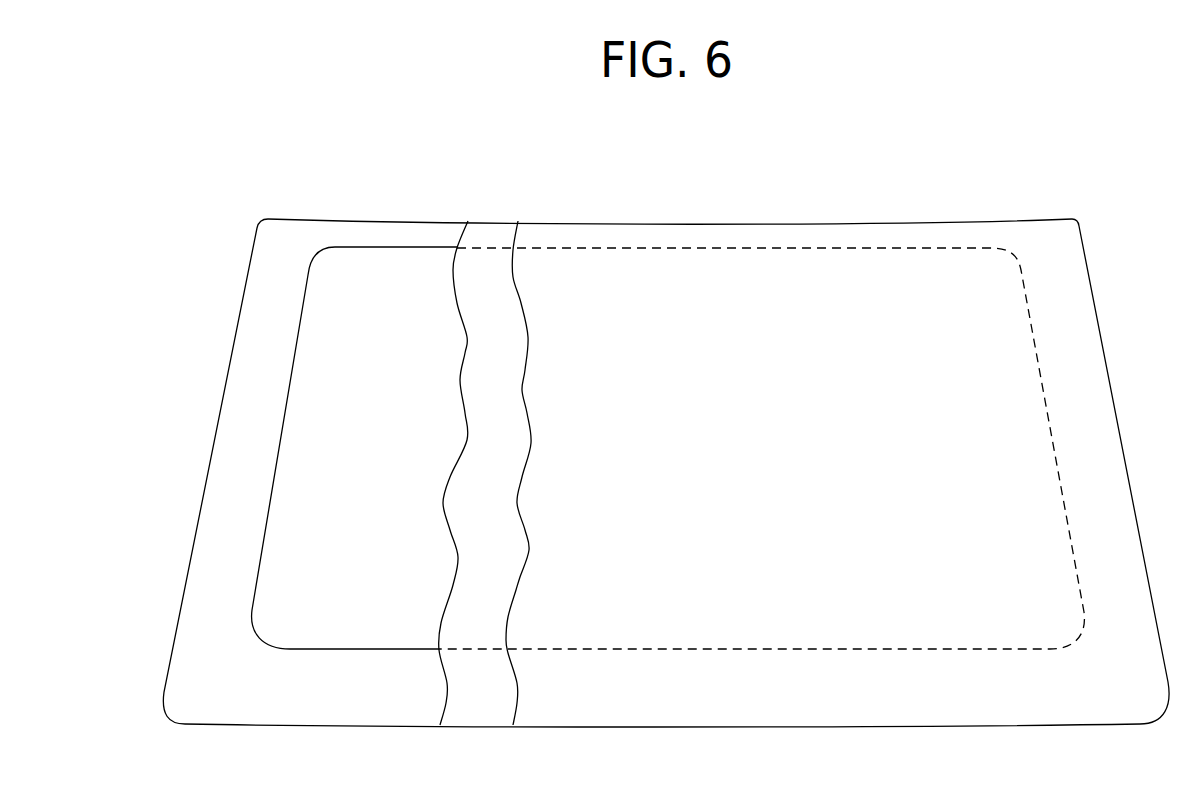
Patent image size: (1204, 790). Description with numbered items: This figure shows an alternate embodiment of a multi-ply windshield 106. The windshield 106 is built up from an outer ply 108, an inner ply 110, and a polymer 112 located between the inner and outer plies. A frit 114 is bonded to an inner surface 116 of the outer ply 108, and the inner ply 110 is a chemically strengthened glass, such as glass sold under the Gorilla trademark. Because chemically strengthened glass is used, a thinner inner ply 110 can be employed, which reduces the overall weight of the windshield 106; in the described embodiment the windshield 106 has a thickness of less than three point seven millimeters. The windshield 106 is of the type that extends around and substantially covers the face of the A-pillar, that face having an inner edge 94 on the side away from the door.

The inner edge 94 is at (703, 222).
The windshield 106 is at (1077, 216).
The outer ply 108 is at (360, 219).
The inner ply 110 is at (723, 483).
The polymer 112 is at (494, 220).
The frit 114 is at (334, 699).
The inner surface 116 is at (366, 594).